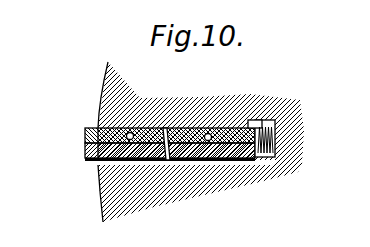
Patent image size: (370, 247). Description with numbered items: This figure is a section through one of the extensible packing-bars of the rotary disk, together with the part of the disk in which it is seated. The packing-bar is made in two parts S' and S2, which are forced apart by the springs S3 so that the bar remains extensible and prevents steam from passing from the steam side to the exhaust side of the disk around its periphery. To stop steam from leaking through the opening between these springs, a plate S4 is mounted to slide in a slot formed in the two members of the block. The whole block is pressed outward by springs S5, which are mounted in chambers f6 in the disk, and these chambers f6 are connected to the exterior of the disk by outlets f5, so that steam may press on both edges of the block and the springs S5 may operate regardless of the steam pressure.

The packing-bar part S' is at (183, 142).
The packing-bar part S2 is at (158, 154).
The springs S3 is at (130, 131).
The plate S4 is at (164, 162).
The springs S5 is at (289, 116).
The outlets f5 is at (112, 163).
The chambers f6 is at (268, 157).